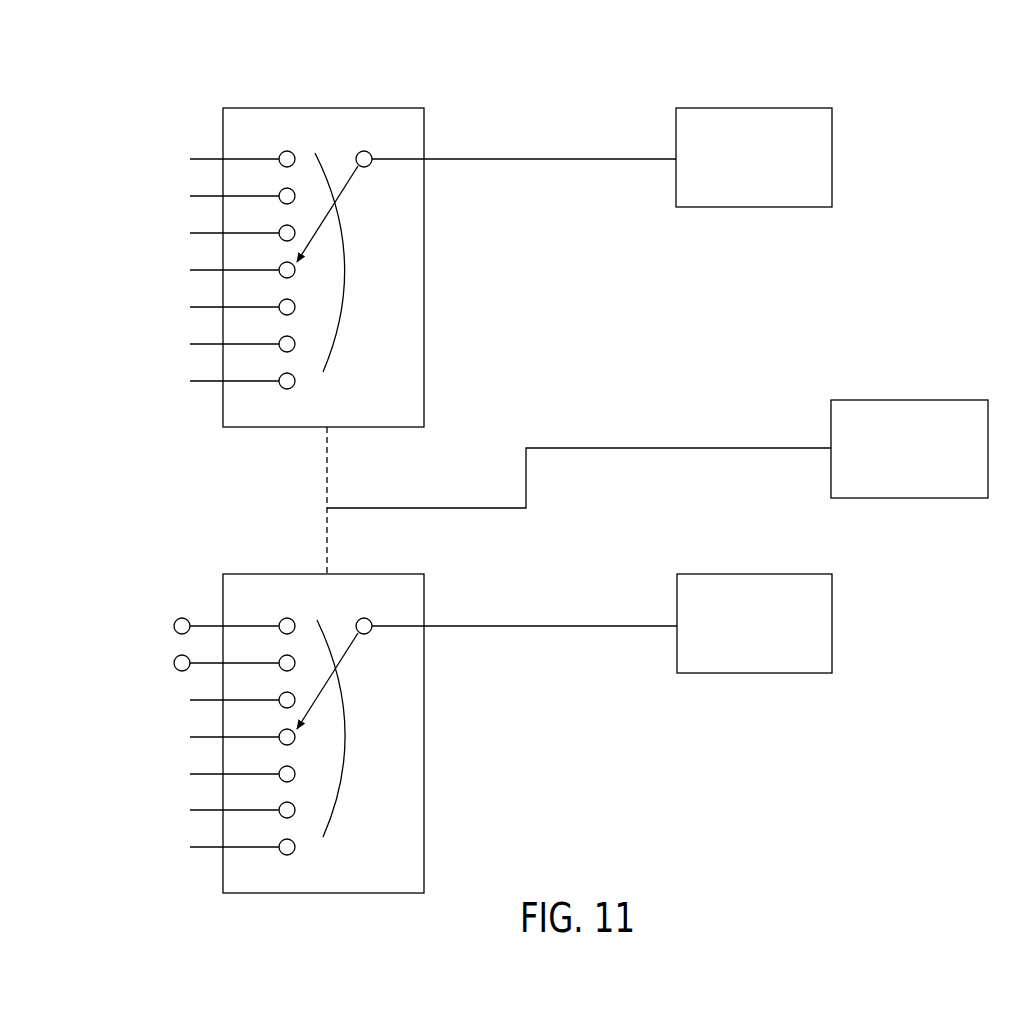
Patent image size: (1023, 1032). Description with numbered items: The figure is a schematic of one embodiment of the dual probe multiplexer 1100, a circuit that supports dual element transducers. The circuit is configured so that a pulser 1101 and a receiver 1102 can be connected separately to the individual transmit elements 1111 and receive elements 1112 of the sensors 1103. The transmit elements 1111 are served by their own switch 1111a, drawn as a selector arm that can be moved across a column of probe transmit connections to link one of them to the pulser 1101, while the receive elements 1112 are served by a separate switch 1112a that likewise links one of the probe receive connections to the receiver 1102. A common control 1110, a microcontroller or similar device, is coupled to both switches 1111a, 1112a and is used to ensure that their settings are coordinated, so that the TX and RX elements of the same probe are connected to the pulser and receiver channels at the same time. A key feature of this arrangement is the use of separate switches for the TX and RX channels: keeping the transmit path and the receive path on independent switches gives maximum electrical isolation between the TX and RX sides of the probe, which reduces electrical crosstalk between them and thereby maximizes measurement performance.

The dual probe multiplexer 1100 is at (643, 92).
The pulser 1101 is at (757, 107).
The receiver 1102 is at (765, 574).
The sensors 1103 is at (117, 147).
The common control 1110 is at (907, 400).
The transmit elements 1111 is at (324, 232).
The switch 1111a is at (347, 178).
The receive elements 1112 is at (291, 708).
The switch 1112a is at (347, 638).